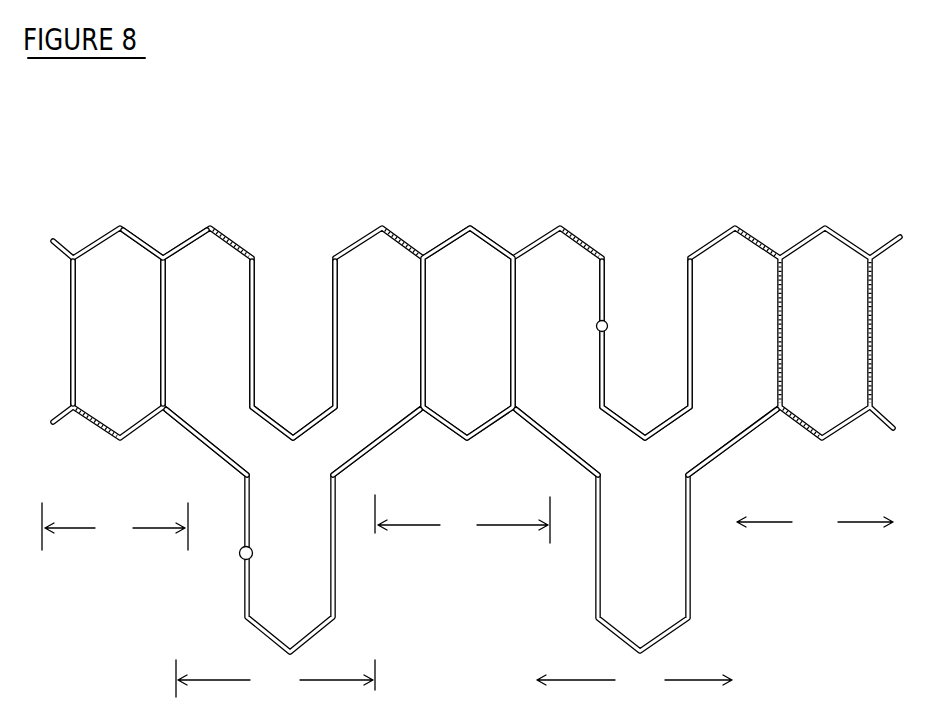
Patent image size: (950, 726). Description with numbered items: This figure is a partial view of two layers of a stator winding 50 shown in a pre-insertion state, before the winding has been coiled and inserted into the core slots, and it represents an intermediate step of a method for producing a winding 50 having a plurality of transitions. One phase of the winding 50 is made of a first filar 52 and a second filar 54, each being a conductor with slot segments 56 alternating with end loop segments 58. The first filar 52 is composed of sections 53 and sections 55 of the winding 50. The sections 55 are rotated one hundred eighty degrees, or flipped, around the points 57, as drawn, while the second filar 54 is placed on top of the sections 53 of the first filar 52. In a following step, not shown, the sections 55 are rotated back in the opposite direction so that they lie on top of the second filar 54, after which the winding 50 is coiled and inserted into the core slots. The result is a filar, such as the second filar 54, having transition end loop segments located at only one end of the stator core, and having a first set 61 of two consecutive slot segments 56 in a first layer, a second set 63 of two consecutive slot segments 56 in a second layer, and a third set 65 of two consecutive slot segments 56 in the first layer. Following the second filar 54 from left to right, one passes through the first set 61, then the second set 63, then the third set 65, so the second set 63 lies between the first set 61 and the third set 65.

The stator winding 50 is at (568, 115).
The first filar 52 is at (239, 559).
The sections of the winding 53 is at (467, 522).
The second filar 54 is at (609, 322).
The sections of the winding 55 is at (454, 678).
The slot segments 56 is at (158, 330).
The points 57 is at (200, 436).
The end loop segments 58 is at (194, 229).
The first set of two consecutive slot segments 61 is at (322, 338).
The second set of two consecutive slot segments 63 is at (512, 337).
The third set of two consecutive slot segments 65 is at (687, 372).